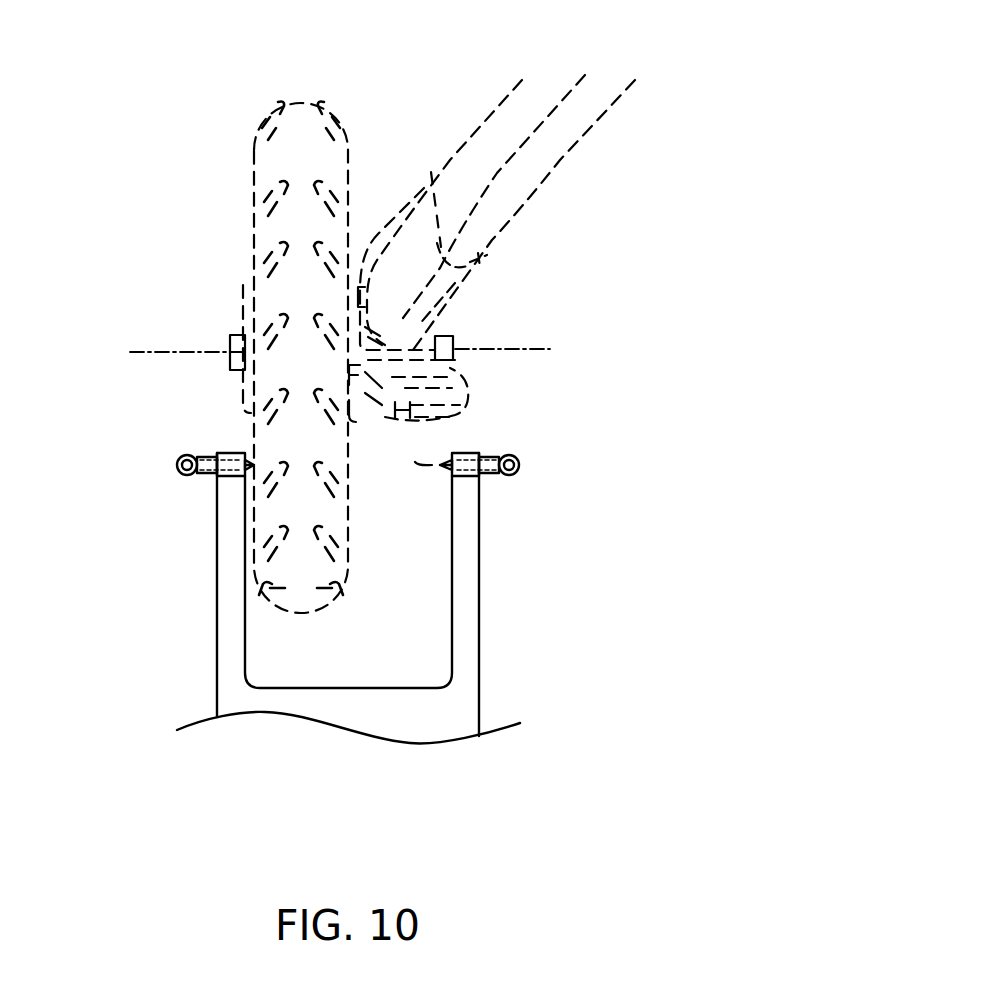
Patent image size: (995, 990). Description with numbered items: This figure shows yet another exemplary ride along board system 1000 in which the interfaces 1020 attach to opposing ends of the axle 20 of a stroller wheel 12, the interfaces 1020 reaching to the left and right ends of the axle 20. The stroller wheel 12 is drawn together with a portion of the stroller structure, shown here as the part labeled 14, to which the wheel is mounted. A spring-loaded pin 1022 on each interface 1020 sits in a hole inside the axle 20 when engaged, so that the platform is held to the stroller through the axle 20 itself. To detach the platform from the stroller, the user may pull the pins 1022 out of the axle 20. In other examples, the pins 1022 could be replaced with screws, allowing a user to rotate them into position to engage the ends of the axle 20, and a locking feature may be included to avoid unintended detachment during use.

The axle 20 is at (272, 231).
The arm 14 is at (522, 183).
The stroller wheel 12 is at (230, 360).
The ride along board system 1000 is at (335, 705).
The interface 1020 is at (217, 553).
The spring-loaded pin 1022 is at (180, 468).